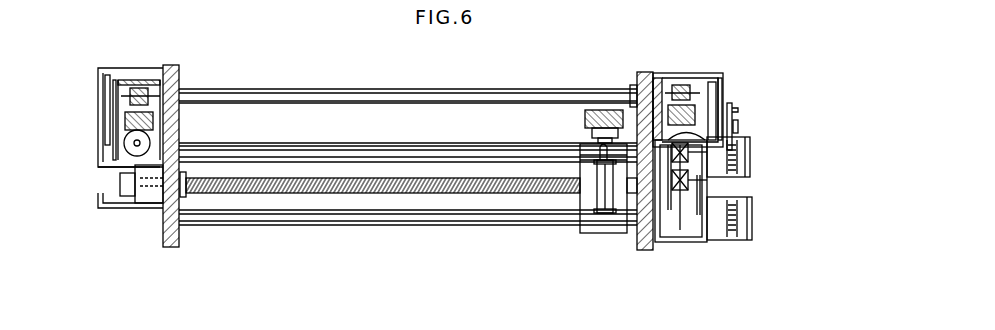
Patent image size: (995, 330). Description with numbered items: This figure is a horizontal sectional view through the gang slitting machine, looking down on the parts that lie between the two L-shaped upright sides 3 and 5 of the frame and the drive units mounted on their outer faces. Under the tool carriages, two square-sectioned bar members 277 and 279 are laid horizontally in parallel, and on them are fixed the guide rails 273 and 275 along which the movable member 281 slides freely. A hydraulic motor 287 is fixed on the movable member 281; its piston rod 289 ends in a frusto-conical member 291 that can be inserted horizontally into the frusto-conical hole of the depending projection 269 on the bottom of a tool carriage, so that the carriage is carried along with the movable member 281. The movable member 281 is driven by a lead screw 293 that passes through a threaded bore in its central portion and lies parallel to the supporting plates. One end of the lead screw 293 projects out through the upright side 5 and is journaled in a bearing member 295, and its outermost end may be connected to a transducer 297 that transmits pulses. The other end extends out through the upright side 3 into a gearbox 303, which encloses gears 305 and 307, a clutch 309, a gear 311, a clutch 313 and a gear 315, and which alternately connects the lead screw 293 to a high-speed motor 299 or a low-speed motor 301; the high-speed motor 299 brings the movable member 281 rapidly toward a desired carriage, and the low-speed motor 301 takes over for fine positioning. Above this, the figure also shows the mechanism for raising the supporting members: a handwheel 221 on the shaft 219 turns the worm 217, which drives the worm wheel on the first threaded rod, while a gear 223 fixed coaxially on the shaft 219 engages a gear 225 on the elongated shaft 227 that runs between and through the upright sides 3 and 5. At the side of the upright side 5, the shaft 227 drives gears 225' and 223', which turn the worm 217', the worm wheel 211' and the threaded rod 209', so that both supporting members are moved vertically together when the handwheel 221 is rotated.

The upright side 3 is at (637, 237).
The upright side 5 is at (178, 233).
The threaded rod 209' is at (93, 172).
The worm wheel 211' is at (183, 136).
The worm 217' is at (172, 106).
The gear 223' is at (84, 95).
The gear 225' is at (131, 102).
The elongated shaft 227 is at (340, 93).
The depending projection 269 is at (603, 112).
The guide rail 273 is at (325, 218).
The guide rail 275 is at (343, 158).
The square-sectioned bar member 277 is at (290, 228).
The square-sectioned bar member 279 is at (285, 146).
The movable member 281 is at (595, 227).
The hydraulic motor 287 is at (602, 192).
The piston rod 289 is at (587, 157).
The frusto-conical member 291 is at (598, 148).
The lead screw 293 is at (383, 193).
The bearing member 295 is at (153, 200).
The transducer 297 is at (128, 190).
The high-speed motor 299 is at (750, 237).
The low-speed motor 301 is at (730, 155).
The gearbox 303 is at (702, 237).
The gear 305 is at (690, 223).
The gear 307 is at (700, 187).
The clutch 309 is at (682, 202).
The gear 311 is at (667, 212).
The clutch 313 is at (692, 163).
The gear 315 is at (640, 122).
The worm 217 is at (688, 96).
The shaft 219 is at (738, 128).
The handwheel 221 is at (733, 110).
The gear 223 is at (747, 105).
The gear 225 is at (752, 94).